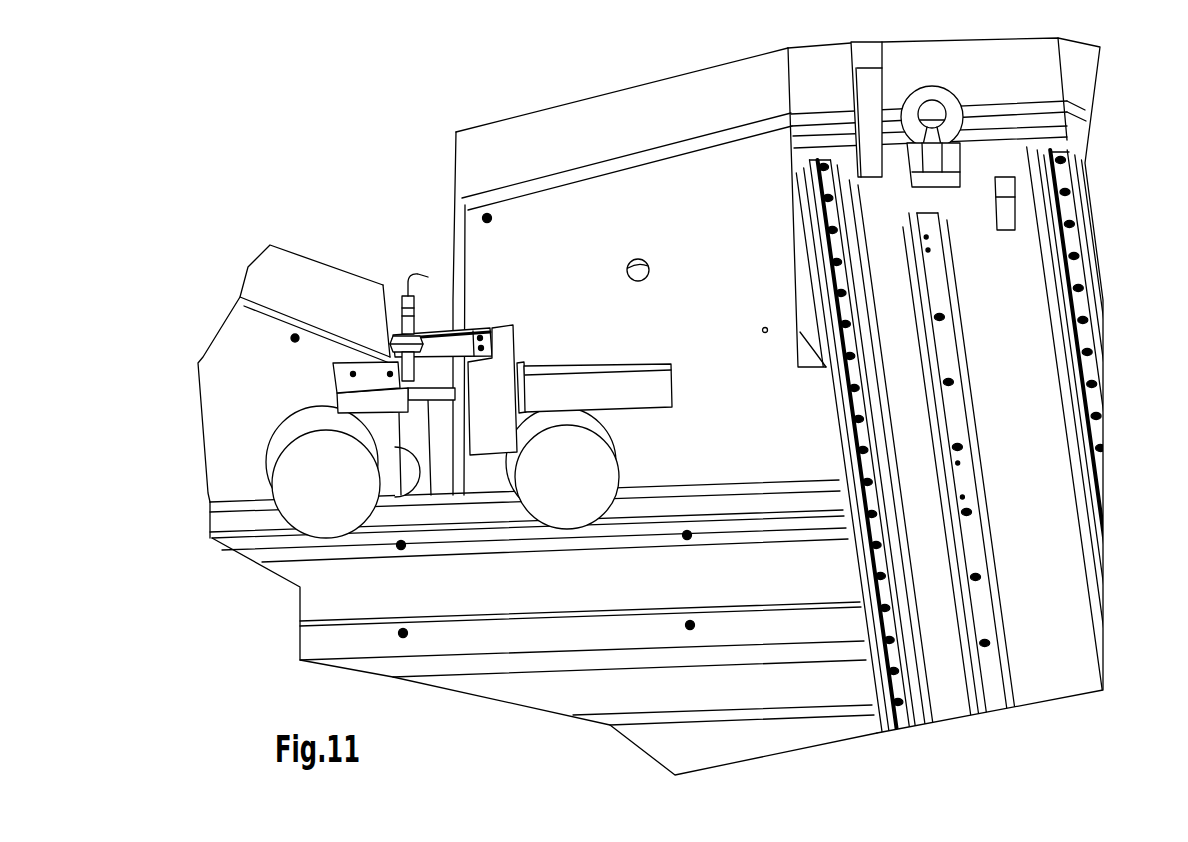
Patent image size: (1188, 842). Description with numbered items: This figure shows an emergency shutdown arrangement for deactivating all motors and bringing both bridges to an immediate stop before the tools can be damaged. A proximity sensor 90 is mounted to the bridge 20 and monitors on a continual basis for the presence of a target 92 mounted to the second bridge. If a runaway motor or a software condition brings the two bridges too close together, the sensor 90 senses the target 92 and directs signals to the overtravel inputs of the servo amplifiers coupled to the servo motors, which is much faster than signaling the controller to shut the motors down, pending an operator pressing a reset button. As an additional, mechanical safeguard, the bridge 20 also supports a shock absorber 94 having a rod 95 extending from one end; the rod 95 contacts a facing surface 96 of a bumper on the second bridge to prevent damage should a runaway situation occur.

The bridge 20 is at (1017, 342).
The proximity sensor 90 is at (417, 315).
The target 92 is at (370, 372).
The shock absorber 94 is at (583, 385).
The rod 95 is at (428, 395).
The facing surface 96 is at (412, 488).